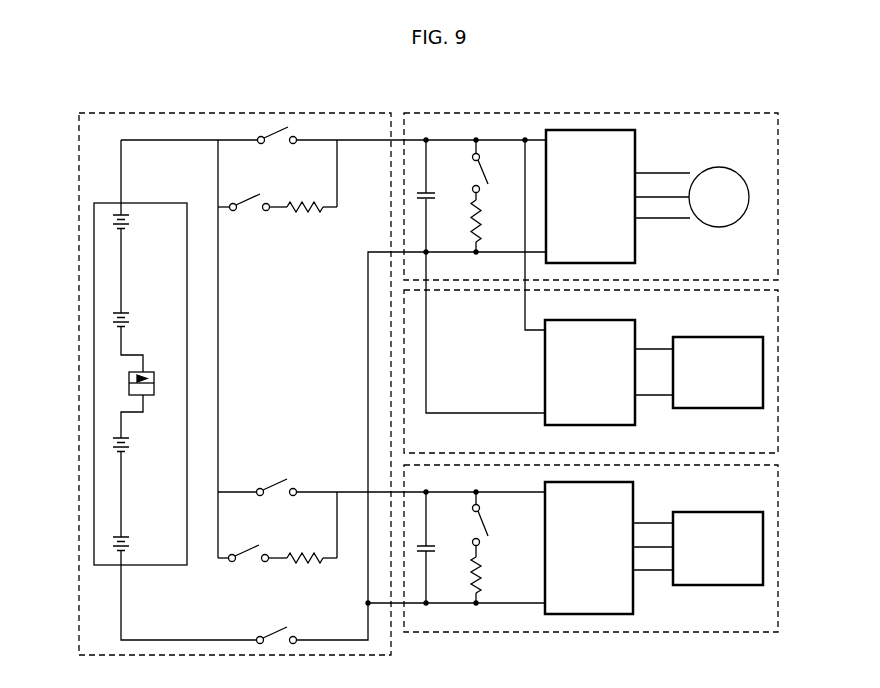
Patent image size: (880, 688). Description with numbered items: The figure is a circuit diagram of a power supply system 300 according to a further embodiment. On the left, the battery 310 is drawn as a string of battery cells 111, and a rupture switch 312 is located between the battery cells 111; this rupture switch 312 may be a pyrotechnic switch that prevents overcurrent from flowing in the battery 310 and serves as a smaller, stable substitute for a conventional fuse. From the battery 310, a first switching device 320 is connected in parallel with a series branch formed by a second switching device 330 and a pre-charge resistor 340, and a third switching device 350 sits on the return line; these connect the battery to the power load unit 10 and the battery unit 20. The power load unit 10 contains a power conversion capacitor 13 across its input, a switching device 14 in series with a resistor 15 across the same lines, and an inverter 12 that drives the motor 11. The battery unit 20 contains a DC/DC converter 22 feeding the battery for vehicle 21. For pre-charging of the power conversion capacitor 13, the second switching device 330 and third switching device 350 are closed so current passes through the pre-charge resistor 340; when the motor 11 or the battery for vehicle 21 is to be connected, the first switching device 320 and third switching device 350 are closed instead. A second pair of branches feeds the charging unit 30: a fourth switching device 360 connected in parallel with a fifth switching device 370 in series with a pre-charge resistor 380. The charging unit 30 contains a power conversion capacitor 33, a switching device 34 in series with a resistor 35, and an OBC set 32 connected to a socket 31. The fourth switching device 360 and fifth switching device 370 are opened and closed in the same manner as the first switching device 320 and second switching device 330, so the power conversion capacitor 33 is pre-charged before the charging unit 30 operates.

The power supply system 300 is at (78, 112).
The battery 310 is at (163, 203).
The battery cell 111 is at (129, 222).
The rupture switch 312 is at (156, 372).
The first switching device 320 is at (280, 150).
The second switching device 330 is at (250, 214).
The pre-charge resistor 340 is at (308, 214).
The third switching device 350 is at (273, 628).
The fourth switching device 360 is at (273, 480).
The fifth switching device 370 is at (246, 547).
The pre-charge resistor 380 is at (299, 547).
The power load unit 10 is at (786, 125).
The motor 11 is at (719, 227).
The inverter 12 is at (636, 137).
The power conversion capacitor 13 is at (434, 197).
The switching device 14 is at (483, 165).
The resistor 15 is at (483, 221).
The battery unit 20 is at (786, 302).
The battery for vehicle 21 is at (718, 408).
The DC/DC converter 22 is at (636, 322).
The charging unit 30 is at (786, 477).
The socket 31 is at (718, 585).
The OBC set 32 is at (634, 492).
The power conversion capacitor 33 is at (434, 549).
The switching device 34 is at (483, 517).
The resistor 35 is at (483, 574).